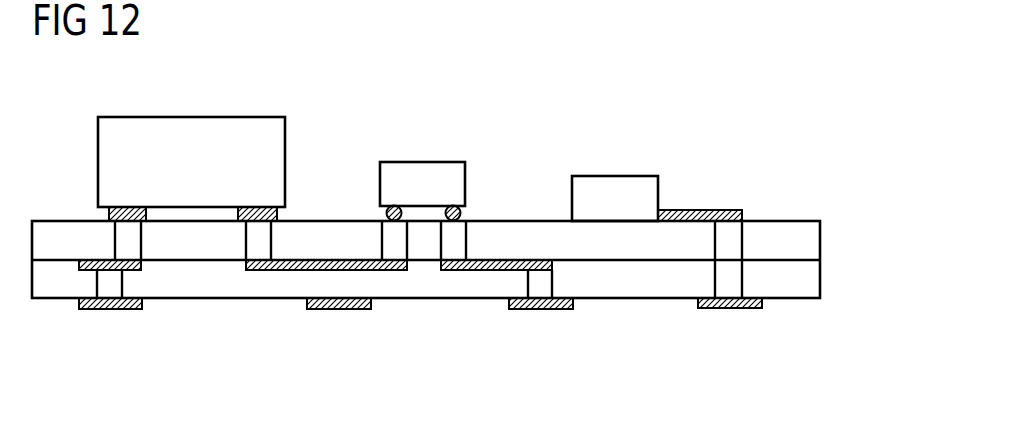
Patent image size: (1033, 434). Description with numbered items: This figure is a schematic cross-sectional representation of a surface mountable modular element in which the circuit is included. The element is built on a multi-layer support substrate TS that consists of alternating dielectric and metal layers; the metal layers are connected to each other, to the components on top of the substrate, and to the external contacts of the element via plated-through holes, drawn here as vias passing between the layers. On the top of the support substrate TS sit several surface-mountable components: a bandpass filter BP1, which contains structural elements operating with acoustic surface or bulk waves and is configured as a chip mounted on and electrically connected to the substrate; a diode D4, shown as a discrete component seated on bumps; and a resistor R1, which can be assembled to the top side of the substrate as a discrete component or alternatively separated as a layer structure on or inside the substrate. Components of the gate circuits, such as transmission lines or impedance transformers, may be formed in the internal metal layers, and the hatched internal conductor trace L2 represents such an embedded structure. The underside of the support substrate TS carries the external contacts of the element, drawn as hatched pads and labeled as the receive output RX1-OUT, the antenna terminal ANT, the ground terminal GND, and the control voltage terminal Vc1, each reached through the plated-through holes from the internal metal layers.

The support substrate TS is at (833, 243).
The bandpass filter BP1 is at (191, 125).
The diode D4 is at (423, 168).
The resistor R1 is at (615, 178).
The inductor (conductor trace) L2 is at (503, 260).
The receive output terminal RX1-OUT is at (109, 310).
The antenna terminal ANT is at (339, 310).
The ground terminal GND is at (539, 310).
The control voltage terminal Vc1 is at (730, 308).